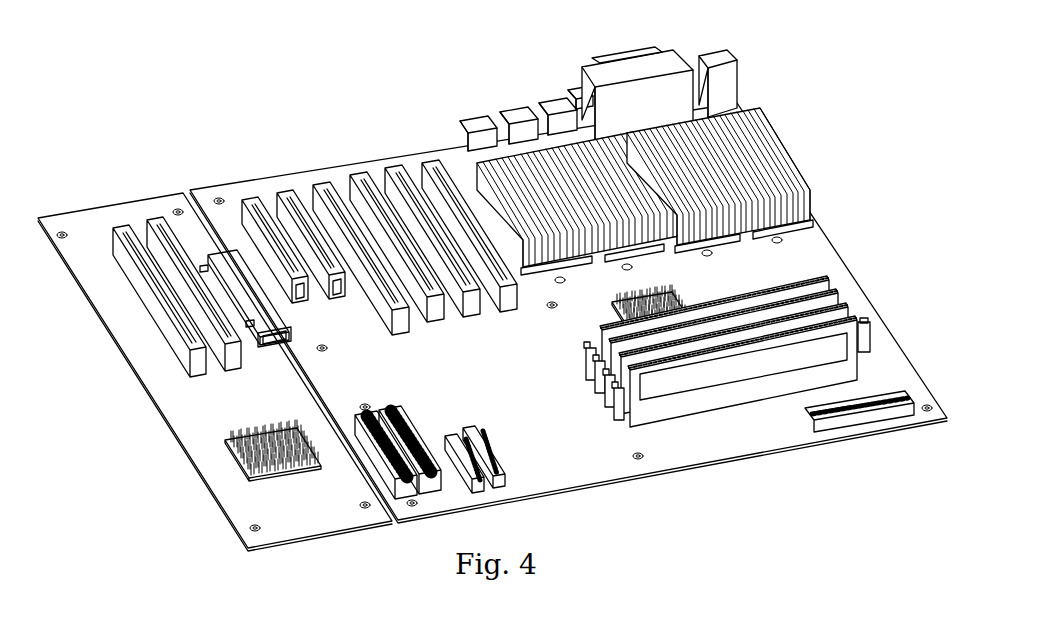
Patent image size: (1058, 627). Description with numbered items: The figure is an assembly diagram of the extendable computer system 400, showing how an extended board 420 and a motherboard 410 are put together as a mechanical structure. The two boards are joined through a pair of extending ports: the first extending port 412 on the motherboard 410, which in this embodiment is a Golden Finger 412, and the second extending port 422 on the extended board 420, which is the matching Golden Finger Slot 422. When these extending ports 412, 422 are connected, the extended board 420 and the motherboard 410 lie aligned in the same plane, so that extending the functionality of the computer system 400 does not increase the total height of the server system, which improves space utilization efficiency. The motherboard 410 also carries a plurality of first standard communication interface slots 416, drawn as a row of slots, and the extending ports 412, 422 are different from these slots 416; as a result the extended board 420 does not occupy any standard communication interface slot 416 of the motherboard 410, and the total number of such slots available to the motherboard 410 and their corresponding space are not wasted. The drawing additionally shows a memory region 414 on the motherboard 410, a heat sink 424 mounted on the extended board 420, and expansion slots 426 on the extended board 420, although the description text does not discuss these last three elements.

The extendable computer system 400 is at (712, 40).
The motherboard 410 is at (758, 453).
The first extending port 412 is at (290, 323).
The memory module region 414 is at (605, 319).
The first standard communication interface slot 416 is at (379, 245).
The extended board 420 is at (318, 534).
The second extending port 422 is at (259, 351).
The heat sink 424 is at (235, 466).
The riser expansion slots 426 is at (167, 215).